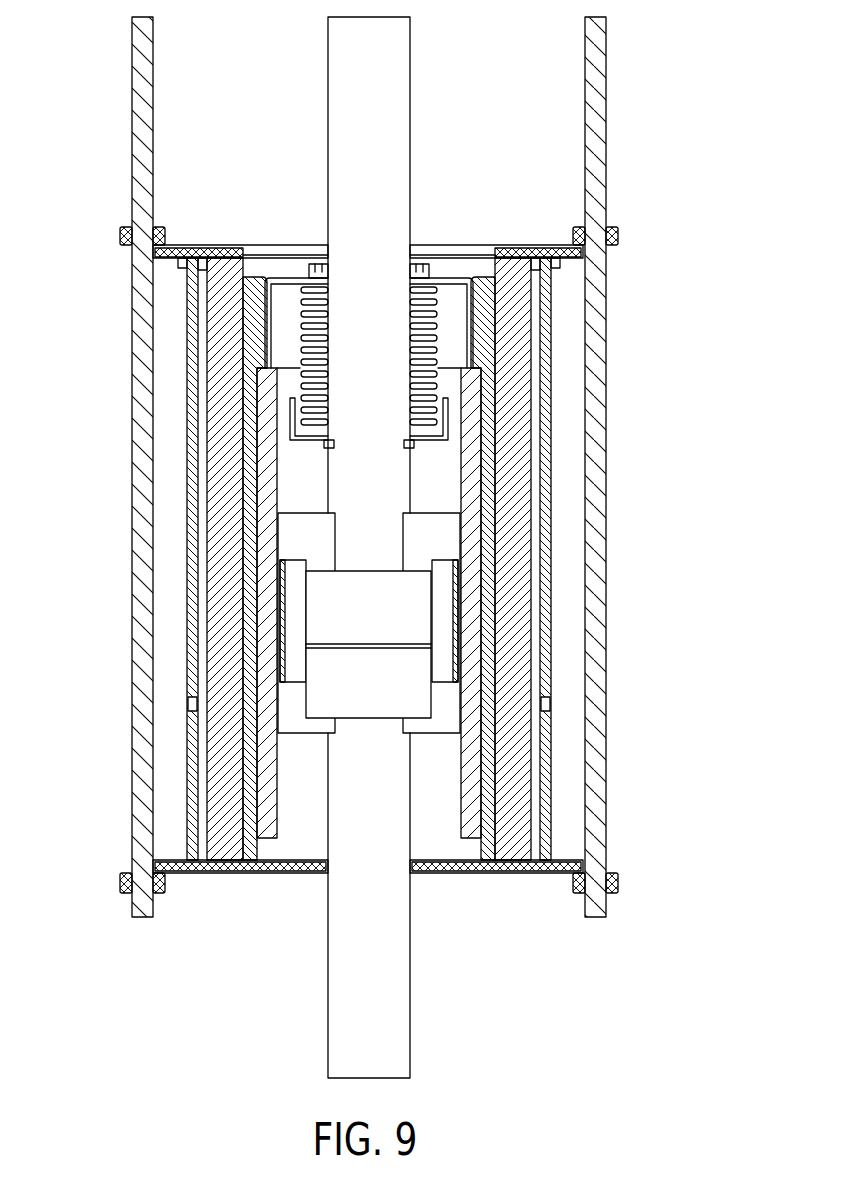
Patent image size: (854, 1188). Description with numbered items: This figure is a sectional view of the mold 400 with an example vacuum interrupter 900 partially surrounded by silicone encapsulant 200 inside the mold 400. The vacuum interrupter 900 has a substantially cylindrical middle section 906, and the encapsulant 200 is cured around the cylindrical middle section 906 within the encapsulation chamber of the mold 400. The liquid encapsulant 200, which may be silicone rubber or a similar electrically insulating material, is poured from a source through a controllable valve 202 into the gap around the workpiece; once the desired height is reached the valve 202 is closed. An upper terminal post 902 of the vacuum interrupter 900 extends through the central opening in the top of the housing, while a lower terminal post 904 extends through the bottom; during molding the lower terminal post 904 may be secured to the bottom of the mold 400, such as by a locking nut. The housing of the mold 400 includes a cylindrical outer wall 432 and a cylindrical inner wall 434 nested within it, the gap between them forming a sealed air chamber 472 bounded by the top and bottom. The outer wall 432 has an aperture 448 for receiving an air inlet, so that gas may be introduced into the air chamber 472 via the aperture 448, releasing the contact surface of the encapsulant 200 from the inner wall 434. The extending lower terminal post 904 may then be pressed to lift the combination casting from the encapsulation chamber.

The mold 400 is at (655, 174).
The vacuum interrupter 900 is at (474, 218).
The upper terminal post 902 is at (350, 168).
The lower terminal post 904 is at (342, 1010).
The cylindrical middle section 906 is at (290, 665).
The encapsulant 200 is at (255, 365).
The valve 202 is at (263, 320).
The outer wall 432 is at (547, 320).
The inner wall 434 is at (516, 415).
The air chamber 472 is at (536, 650).
The aperture 448 is at (546, 711).